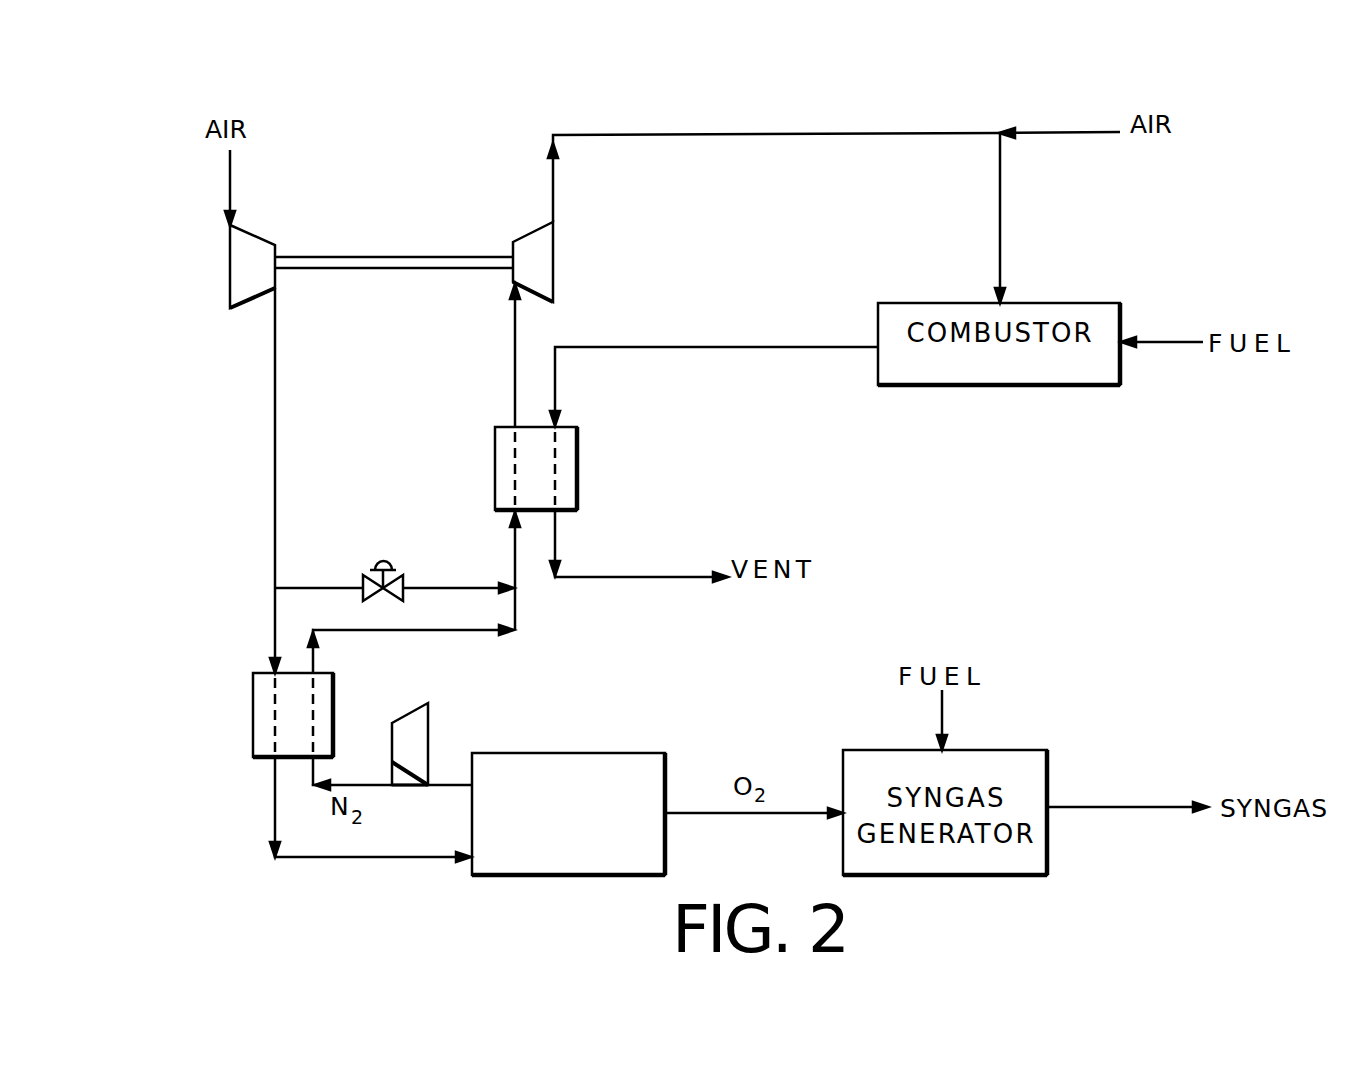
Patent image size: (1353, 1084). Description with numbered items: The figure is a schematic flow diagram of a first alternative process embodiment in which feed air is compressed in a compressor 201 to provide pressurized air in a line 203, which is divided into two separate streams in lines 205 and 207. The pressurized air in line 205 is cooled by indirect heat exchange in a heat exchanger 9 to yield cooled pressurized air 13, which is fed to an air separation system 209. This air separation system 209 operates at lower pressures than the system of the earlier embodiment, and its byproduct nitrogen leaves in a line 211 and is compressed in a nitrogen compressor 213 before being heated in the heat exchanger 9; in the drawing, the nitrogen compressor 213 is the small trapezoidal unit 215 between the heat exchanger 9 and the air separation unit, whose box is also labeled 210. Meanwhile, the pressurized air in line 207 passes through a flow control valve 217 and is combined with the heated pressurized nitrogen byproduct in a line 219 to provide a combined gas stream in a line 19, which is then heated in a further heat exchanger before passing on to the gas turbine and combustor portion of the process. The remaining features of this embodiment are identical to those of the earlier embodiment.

The compressor 201 is at (230, 262).
The pressurized air line 203 is at (275, 420).
The pressurized air line 205 is at (275, 612).
The pressurized air line 207 is at (319, 588).
The flow control valve 217 is at (380, 565).
The combined gas stream line 19 is at (512, 546).
The heated pressurized nitrogen byproduct line 219 is at (437, 630).
The heat exchanger 9 is at (253, 700).
The cooled pressurized air 13 is at (275, 815).
The nitrogen stream 215 is at (374, 779).
The nitrogen compressor 213 is at (430, 738).
The byproduct nitrogen line 211 is at (455, 785).
The air separation unit 210 is at (622, 753).
The air separation system 209 is at (520, 878).